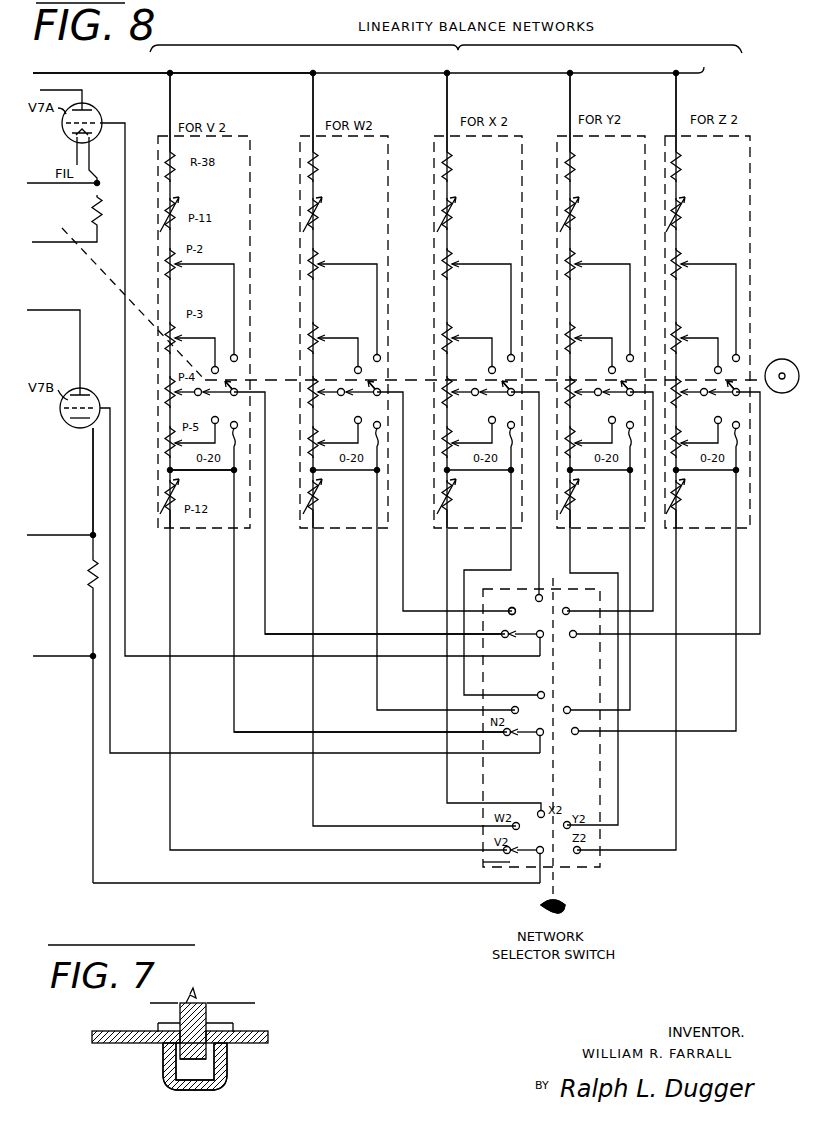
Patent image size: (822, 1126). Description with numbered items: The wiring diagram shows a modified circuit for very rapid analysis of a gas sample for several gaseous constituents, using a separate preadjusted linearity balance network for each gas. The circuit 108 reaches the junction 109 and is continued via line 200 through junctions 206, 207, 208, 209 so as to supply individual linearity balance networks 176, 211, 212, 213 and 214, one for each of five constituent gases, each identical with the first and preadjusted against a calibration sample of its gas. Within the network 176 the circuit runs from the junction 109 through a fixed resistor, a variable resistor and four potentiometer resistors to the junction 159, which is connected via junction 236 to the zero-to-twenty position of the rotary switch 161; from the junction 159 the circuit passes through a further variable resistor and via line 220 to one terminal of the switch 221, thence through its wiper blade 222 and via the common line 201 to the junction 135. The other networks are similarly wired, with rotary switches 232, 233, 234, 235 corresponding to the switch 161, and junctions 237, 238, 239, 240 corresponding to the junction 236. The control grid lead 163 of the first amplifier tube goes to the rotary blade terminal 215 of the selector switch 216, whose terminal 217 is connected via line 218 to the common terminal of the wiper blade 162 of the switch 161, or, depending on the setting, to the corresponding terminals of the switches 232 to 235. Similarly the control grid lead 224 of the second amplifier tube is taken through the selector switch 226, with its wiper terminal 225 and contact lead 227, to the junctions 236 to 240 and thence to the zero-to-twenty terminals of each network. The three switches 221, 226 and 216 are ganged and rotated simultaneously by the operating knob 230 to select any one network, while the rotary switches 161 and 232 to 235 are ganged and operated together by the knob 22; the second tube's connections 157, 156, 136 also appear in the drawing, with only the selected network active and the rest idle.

The circuit 108 is at (85, 73).
The junction 109 is at (170, 73).
The line 200 is at (228, 73).
The junction 206 is at (316, 73).
The junction 207 is at (454, 73).
The junction 208 is at (576, 73).
The junction 209 is at (700, 73).
The line 163 is at (126, 133).
The linearity balance network 176 is at (250, 150).
The linearity balance network 211 is at (386, 167).
The linearity balance network 212 is at (523, 148).
The linearity balance network 213 is at (634, 137).
The linearity balance network 214 is at (752, 165).
The rotary switch 161 is at (242, 377).
The wiper blade 162 is at (248, 394).
The rotary switch 232 is at (375, 376).
The rotary switch 233 is at (509, 376).
The rotary switch 234 is at (623, 372).
The rotary switch 235 is at (739, 372).
The knob 22 is at (779, 393).
The junction 159 is at (168, 470).
The junction 236 is at (235, 473).
The junction 237 is at (377, 473).
The junction 238 is at (511, 473).
The junction 239 is at (629, 473).
The junction 240 is at (736, 473).
The conductor 157 is at (92, 534).
The conductor 156 is at (50, 535).
The conductor 136 is at (55, 656).
The junction 135 is at (91, 665).
The line 218 is at (281, 633).
The terminal 217 is at (510, 615).
The rotary blade terminal 215 is at (530, 638).
The selector switch 216 is at (555, 642).
The switch wiper 225 is at (528, 737).
The selector switch 226 is at (562, 739).
The conductor 227 is at (281, 734).
The control grid lead 224 is at (135, 754).
The line 220 is at (177, 850).
The common line 201 is at (338, 883).
The wiper blade 222 is at (483, 862).
The switch 221 is at (519, 878).
The operating knob 230 is at (568, 911).